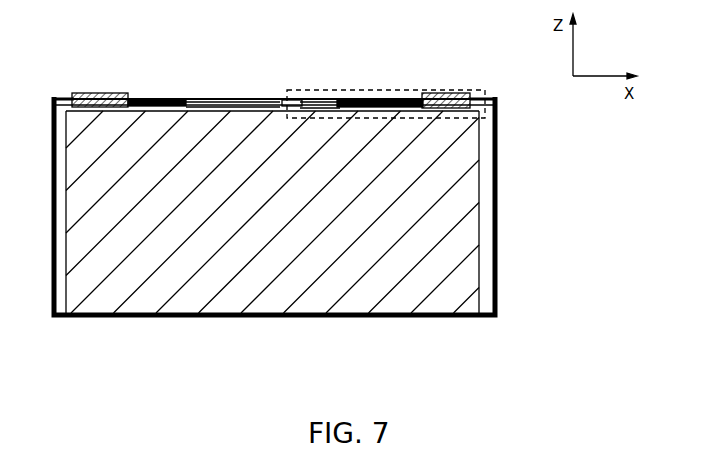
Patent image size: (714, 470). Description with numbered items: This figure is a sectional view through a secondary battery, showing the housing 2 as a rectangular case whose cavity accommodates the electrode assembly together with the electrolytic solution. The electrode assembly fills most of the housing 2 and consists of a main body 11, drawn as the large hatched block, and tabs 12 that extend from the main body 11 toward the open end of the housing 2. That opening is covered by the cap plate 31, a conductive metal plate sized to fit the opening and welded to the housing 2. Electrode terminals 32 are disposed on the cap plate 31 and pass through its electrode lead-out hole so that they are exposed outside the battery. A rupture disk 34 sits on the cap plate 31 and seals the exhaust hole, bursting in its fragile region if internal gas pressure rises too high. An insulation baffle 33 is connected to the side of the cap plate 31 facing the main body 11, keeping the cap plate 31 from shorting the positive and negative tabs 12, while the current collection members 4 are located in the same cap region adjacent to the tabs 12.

The housing 2 is at (497, 200).
The main body 11 is at (392, 305).
The tabs 12 is at (209, 102).
The cap plate 31 is at (168, 98).
The electrode terminals 32 is at (103, 92).
The insulation baffle 33 is at (350, 100).
The rupture disk 34 is at (293, 100).
The current collection members 4 is at (415, 98).